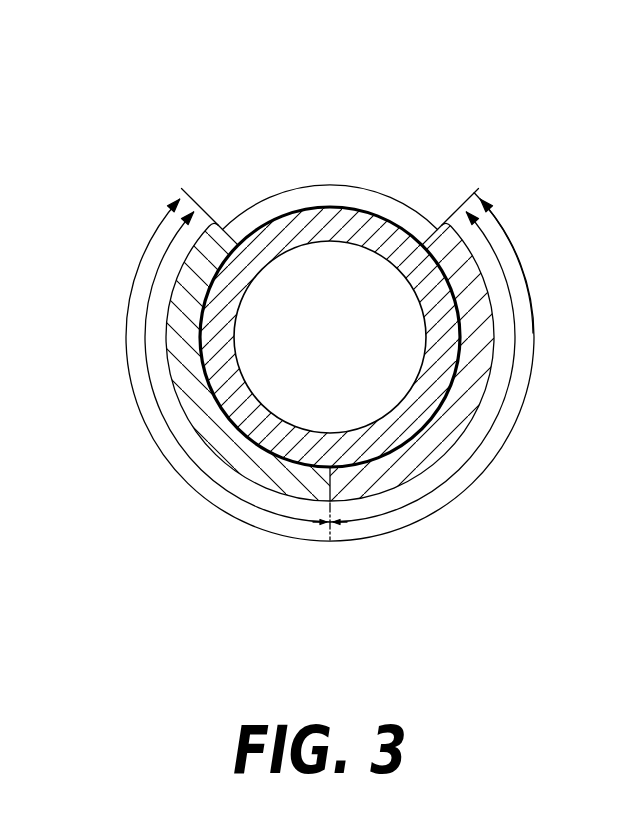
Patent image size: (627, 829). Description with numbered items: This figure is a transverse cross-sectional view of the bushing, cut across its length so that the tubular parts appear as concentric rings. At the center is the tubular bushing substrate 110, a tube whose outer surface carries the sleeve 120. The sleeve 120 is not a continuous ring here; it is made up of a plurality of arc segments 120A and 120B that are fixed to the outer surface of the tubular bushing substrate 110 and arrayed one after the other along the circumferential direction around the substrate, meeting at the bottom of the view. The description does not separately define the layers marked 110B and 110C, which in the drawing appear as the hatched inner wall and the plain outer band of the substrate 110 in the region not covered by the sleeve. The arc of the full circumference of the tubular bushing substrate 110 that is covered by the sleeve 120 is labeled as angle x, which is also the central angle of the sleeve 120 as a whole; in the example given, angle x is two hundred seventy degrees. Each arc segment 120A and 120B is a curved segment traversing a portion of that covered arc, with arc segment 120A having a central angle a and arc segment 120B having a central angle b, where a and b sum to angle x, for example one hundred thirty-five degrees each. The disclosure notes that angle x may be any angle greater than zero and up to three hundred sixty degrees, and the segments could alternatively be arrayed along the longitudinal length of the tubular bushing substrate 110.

The tubular bushing substrate 110 is at (331, 244).
The inner layer of ring member 110B is at (370, 223).
The outer layer of ring member 110C is at (411, 223).
The sleeve 120 is at (330, 459).
The arc segment 120A is at (303, 497).
The arc segment 120B is at (343, 497).
The angle x is at (125, 333).
The central angle a is at (172, 442).
The central angle b is at (534, 333).